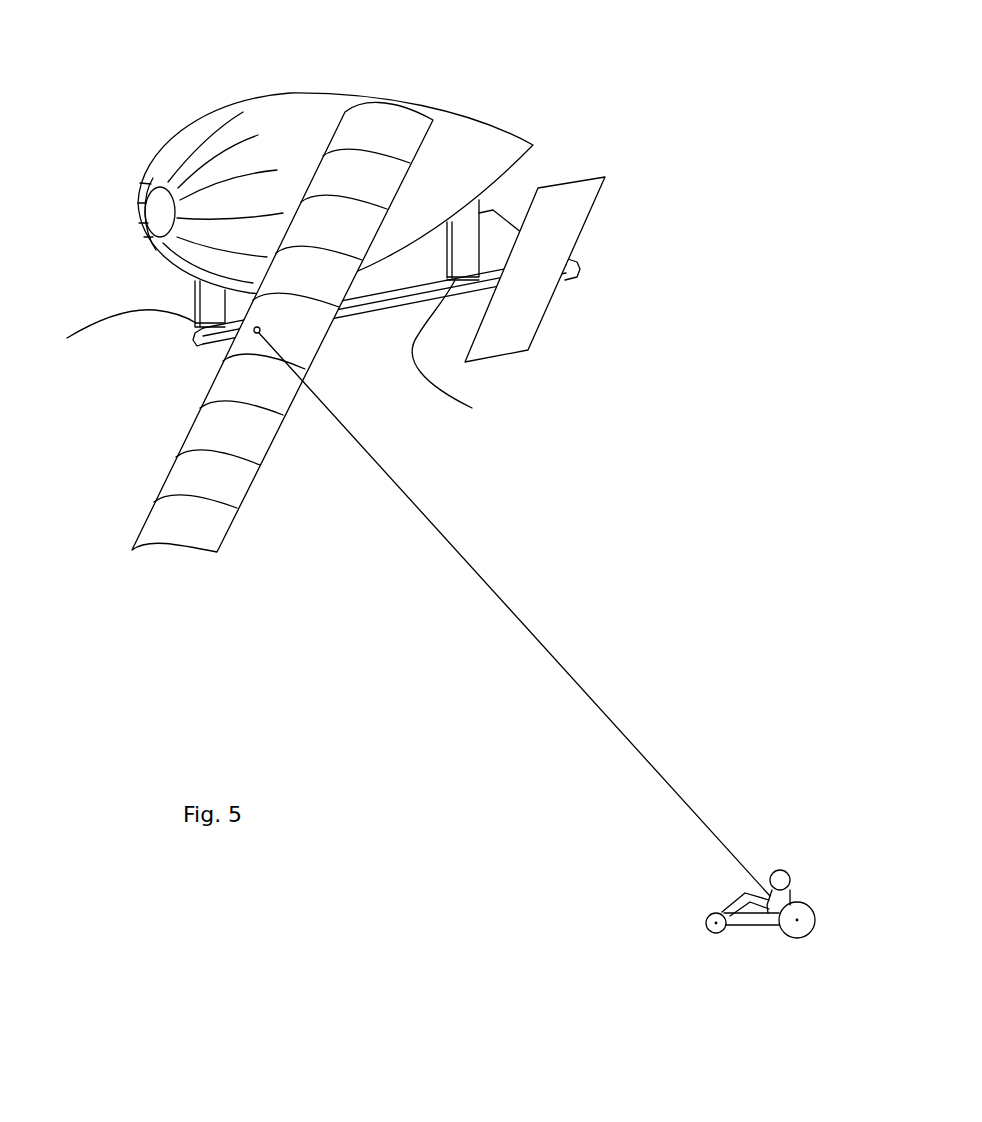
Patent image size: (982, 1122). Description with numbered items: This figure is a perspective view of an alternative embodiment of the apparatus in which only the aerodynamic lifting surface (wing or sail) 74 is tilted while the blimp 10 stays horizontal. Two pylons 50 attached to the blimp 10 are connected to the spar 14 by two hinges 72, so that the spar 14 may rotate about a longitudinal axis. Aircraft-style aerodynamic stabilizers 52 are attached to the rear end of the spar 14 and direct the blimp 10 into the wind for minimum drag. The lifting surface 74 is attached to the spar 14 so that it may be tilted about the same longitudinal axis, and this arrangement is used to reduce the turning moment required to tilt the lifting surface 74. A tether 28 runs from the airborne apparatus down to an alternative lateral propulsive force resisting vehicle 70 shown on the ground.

The blimp 10 is at (253, 125).
The spar 14 is at (385, 307).
The tether 28 is at (505, 600).
The pylons 50 is at (210, 305).
The aircraft style aerodynamic stabilizers 52 is at (495, 228).
The lateral propulsive force resisting vehicle 70 is at (792, 913).
The hinge 72 is at (273, 352).
The aerodynamic lifting surface (wing or sail) 74 is at (223, 432).